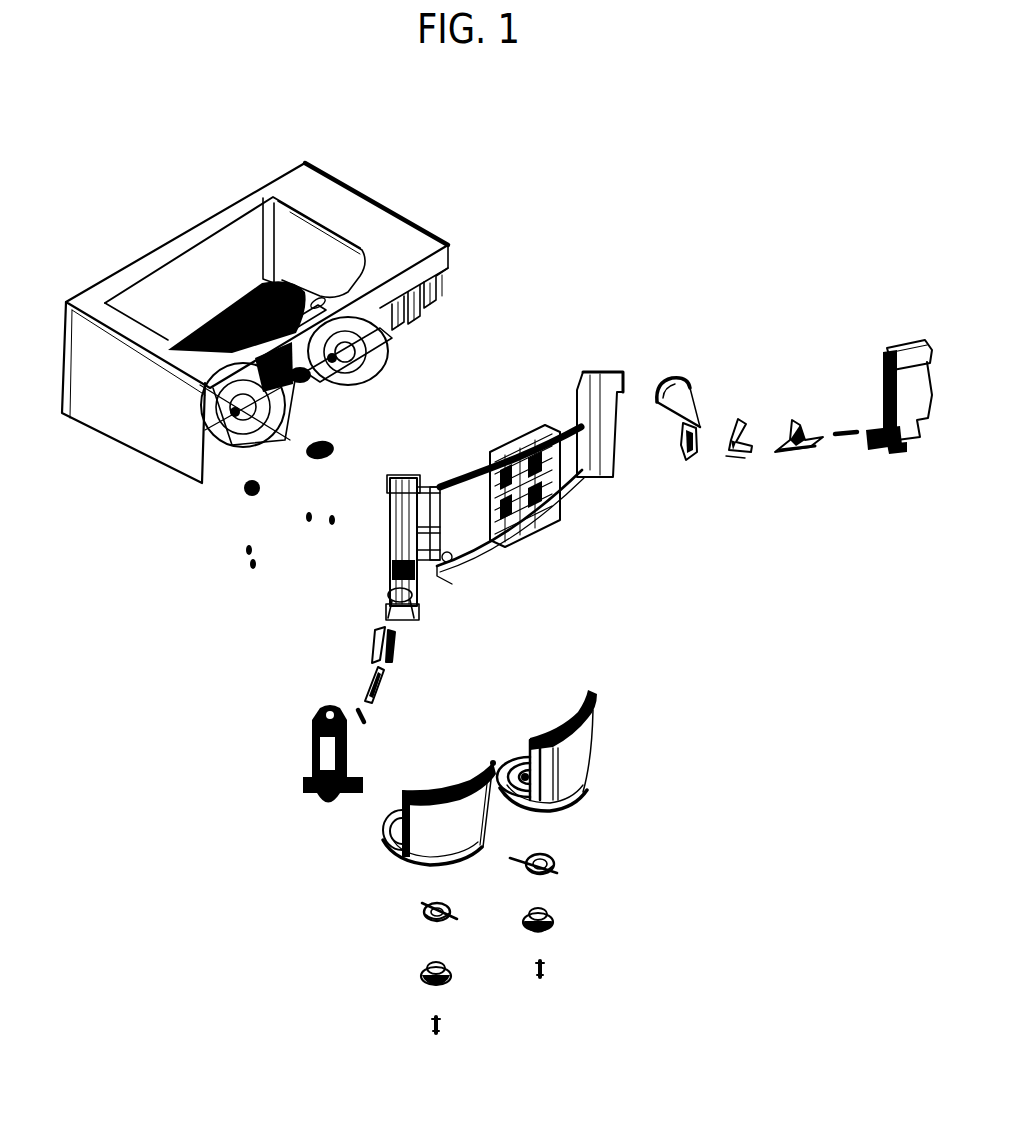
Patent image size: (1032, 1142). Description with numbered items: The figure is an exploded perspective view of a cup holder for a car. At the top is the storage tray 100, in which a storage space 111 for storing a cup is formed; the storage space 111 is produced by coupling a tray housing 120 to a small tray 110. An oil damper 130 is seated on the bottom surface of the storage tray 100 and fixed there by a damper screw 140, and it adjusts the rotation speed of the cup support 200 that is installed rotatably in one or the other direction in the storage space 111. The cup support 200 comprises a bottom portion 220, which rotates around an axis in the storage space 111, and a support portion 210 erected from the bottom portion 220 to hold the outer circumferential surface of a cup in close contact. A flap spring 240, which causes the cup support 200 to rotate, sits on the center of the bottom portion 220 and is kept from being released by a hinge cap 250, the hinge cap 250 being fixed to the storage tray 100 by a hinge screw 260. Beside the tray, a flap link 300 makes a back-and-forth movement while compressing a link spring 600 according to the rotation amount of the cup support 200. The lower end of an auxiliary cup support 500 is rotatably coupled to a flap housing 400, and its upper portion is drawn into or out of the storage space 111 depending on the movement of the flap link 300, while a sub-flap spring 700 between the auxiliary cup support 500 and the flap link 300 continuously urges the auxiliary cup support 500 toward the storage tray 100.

The storage tray 100 is at (88, 537).
The small tray 110 is at (122, 416).
The storage space 111 is at (295, 243).
The tray housing 120 is at (388, 512).
The oil damper 130 is at (332, 450).
The damper screw 140 is at (333, 519).
The cup support 200 is at (465, 815).
The support portion 210 is at (582, 762).
The bottom portion 220 is at (386, 833).
The flap spring 240 is at (558, 866).
The hinge cap 250 is at (553, 917).
The hinge screw 260 is at (543, 966).
The flap link 300 is at (792, 417).
The flap housing 400 is at (905, 342).
The auxiliary cup support 500 is at (670, 380).
The link spring 600 is at (843, 440).
The sub-flap spring 700 is at (730, 460).